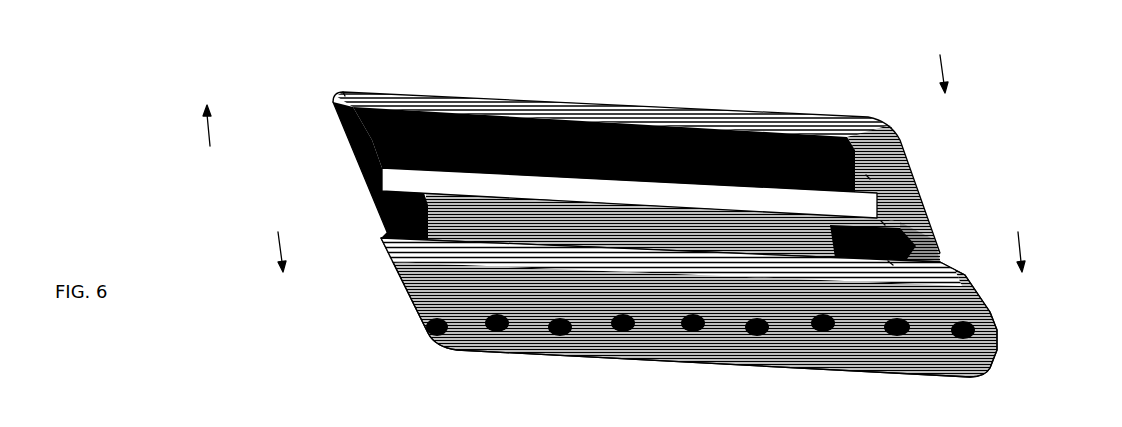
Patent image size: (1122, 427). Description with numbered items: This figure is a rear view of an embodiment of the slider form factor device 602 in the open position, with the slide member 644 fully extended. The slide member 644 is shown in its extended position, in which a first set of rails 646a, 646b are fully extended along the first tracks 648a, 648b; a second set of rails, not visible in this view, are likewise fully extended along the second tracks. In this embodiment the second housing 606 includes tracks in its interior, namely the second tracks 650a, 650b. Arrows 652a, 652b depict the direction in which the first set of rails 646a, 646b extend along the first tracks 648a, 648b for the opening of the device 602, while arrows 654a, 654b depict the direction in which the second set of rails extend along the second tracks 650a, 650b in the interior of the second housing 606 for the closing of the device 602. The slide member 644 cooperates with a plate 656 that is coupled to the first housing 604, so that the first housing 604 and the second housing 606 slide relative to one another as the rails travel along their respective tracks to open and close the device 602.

The slider form factor device 602 is at (88, 94).
The first housing 604 is at (445, 93).
The second housing 606 is at (413, 310).
The slide member 644 is at (383, 183).
The rail 646a is at (883, 223).
The rail 646b is at (385, 210).
The first track 648a is at (868, 177).
The first track 648b is at (345, 94).
The second track 650a is at (890, 263).
The second track 650b is at (413, 237).
The arrow 652a is at (858, 137).
The arrow 652b is at (330, 113).
The arrow 654a is at (912, 265).
The arrow 654b is at (410, 237).
The plate 656 is at (607, 120).